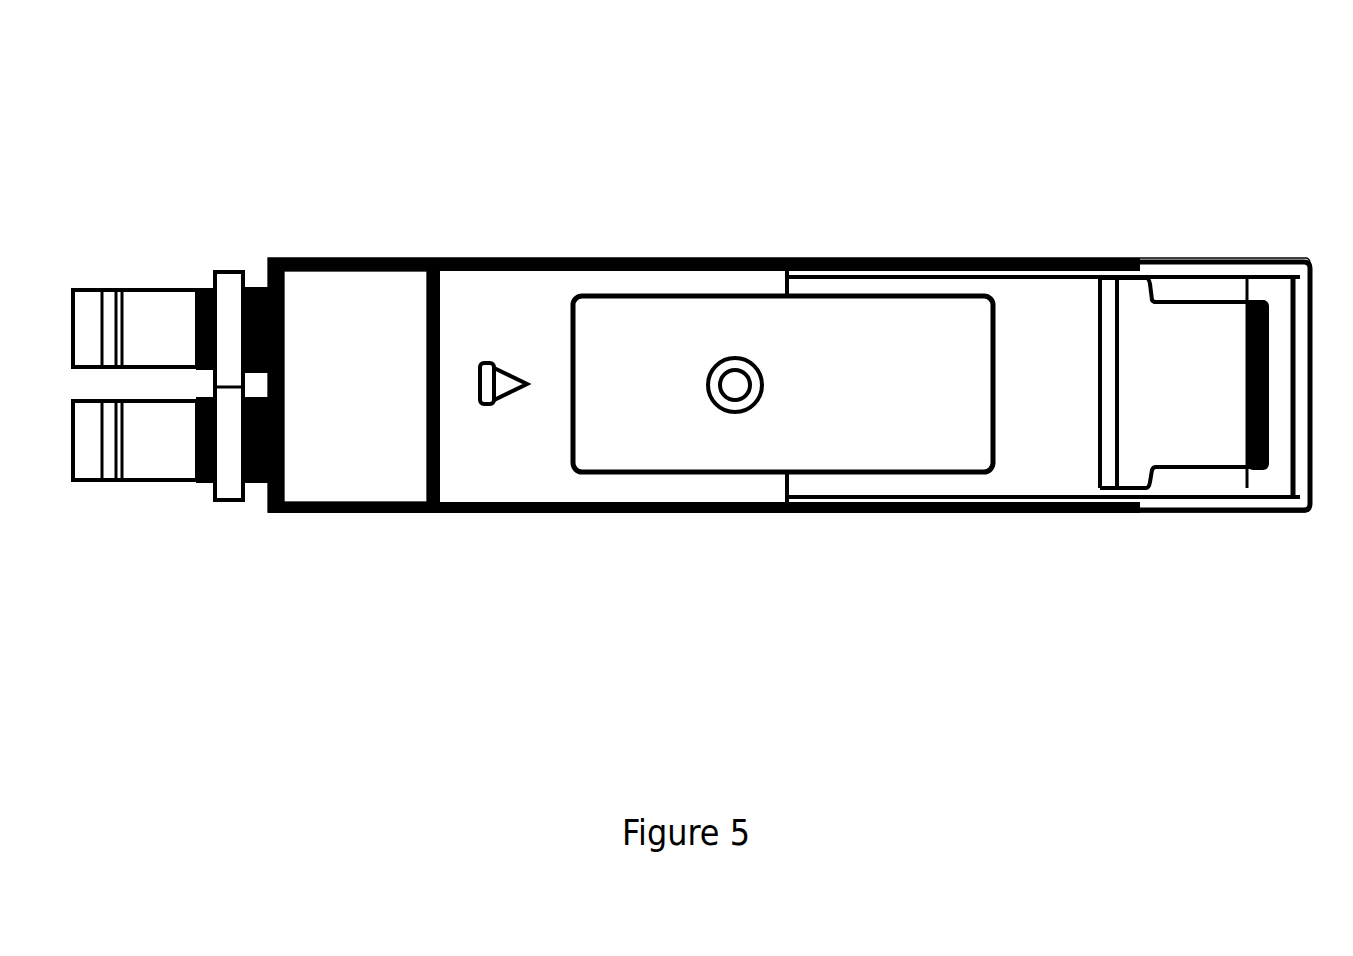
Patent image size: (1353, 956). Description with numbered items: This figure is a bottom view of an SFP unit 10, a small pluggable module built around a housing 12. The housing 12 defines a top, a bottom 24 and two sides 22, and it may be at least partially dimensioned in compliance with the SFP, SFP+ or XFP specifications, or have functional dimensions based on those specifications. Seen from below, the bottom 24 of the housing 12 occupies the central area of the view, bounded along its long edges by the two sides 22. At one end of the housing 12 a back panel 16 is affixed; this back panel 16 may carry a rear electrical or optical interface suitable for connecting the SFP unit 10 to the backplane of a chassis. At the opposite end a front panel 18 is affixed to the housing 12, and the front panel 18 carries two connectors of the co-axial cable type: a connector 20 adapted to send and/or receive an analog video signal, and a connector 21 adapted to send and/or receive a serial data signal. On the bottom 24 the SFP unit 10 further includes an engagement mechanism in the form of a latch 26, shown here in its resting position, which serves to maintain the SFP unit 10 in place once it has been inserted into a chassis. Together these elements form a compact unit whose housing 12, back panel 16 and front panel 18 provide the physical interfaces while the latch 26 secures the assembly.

The SFP unit 10 is at (1063, 82).
The housing 12 is at (1021, 372).
The back panel 16 is at (1311, 328).
The front panel 18 is at (270, 266).
The connector 20 is at (168, 349).
The connector 21 is at (168, 456).
The sides 22 is at (635, 258).
The bottom 24 is at (697, 437).
The latch 26 is at (494, 404).